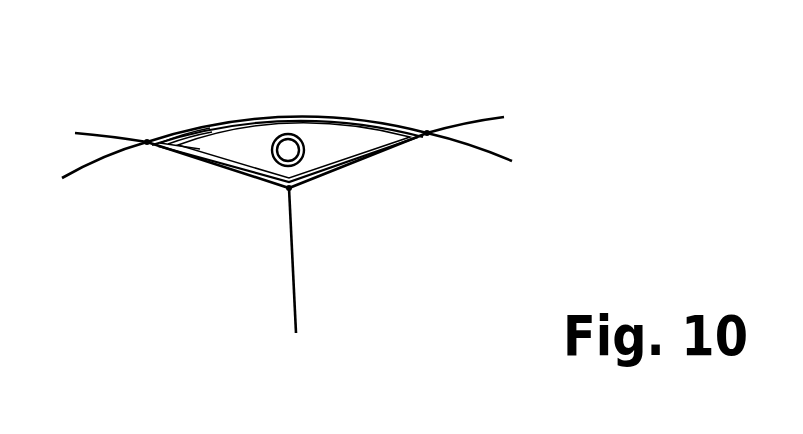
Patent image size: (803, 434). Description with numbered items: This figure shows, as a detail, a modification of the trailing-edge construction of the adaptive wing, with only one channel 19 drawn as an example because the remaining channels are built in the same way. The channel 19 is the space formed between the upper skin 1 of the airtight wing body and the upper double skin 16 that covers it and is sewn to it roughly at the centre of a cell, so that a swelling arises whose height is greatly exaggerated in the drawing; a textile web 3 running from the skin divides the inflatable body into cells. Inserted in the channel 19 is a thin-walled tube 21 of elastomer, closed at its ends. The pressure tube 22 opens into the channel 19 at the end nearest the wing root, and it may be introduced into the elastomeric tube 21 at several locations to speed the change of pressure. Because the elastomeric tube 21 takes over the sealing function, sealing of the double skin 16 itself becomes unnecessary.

The upper skin 1 is at (232, 168).
The textile web 3 is at (292, 285).
The upper double skin 16 is at (492, 117).
The channel 19 is at (252, 145).
The elastomeric tube 21 is at (198, 126).
The pressure tube 22 is at (287, 148).